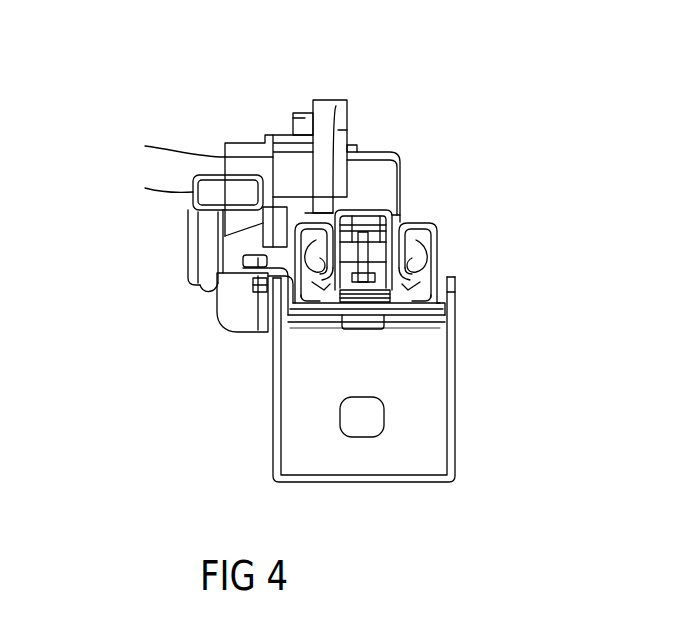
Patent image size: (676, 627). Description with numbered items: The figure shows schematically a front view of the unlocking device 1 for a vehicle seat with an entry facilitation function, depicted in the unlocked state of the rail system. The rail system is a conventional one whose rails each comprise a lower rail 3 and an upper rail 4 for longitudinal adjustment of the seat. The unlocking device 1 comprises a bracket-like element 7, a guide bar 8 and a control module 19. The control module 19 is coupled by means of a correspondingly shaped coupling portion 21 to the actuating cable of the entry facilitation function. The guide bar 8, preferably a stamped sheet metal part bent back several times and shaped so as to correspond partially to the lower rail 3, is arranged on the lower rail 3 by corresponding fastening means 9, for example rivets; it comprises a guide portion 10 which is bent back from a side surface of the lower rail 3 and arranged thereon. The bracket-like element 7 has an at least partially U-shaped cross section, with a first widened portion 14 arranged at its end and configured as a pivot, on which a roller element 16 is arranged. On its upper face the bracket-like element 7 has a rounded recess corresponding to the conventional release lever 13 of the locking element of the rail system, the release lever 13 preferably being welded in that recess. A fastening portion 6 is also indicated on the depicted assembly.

The unlocking device 1 is at (457, 80).
The lower rail 3 is at (437, 272).
The upper rail 4 is at (390, 228).
The fastening portion 6 is at (437, 377).
The bracket-like element 7 is at (190, 230).
The guide bar 8 is at (330, 316).
The fastening means 9 is at (372, 328).
The guide portion 10 is at (262, 312).
The release lever 13 is at (150, 168).
The first widened portion 14 is at (203, 291).
The roller element 16 is at (237, 294).
The control module 19 is at (406, 158).
The coupling portion 21 is at (322, 96).